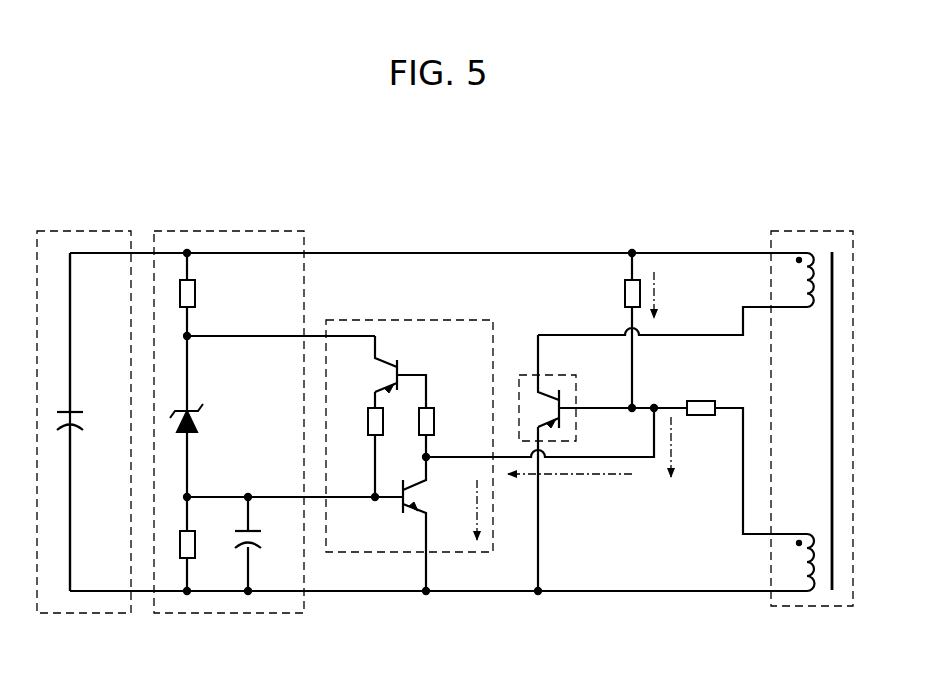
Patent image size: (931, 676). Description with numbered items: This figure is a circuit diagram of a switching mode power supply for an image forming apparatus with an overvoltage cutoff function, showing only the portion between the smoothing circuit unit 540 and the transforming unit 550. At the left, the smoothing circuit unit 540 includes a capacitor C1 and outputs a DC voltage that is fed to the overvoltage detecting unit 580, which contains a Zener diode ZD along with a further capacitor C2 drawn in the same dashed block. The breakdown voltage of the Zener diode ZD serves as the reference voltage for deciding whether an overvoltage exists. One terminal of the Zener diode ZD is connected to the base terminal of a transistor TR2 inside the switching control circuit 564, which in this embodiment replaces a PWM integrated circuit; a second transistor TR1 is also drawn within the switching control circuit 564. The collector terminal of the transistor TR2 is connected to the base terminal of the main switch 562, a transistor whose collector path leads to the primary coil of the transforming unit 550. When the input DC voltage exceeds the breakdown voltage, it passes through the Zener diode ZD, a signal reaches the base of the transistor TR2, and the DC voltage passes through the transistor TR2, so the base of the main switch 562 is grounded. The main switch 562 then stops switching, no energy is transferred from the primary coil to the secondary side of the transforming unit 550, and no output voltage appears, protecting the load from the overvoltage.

The smoothing circuit unit 540 is at (95, 406).
The overvoltage detecting unit 580 is at (278, 406).
The switching control circuit 564 is at (409, 442).
The main switch 562 is at (553, 375).
The transforming unit 550 is at (813, 231).
The capacitor C1 is at (88, 422).
The capacitor C2 is at (265, 544).
The Zener diode ZD is at (204, 420).
The transistor TR1 is at (384, 416).
The transistor TR2 is at (437, 524).